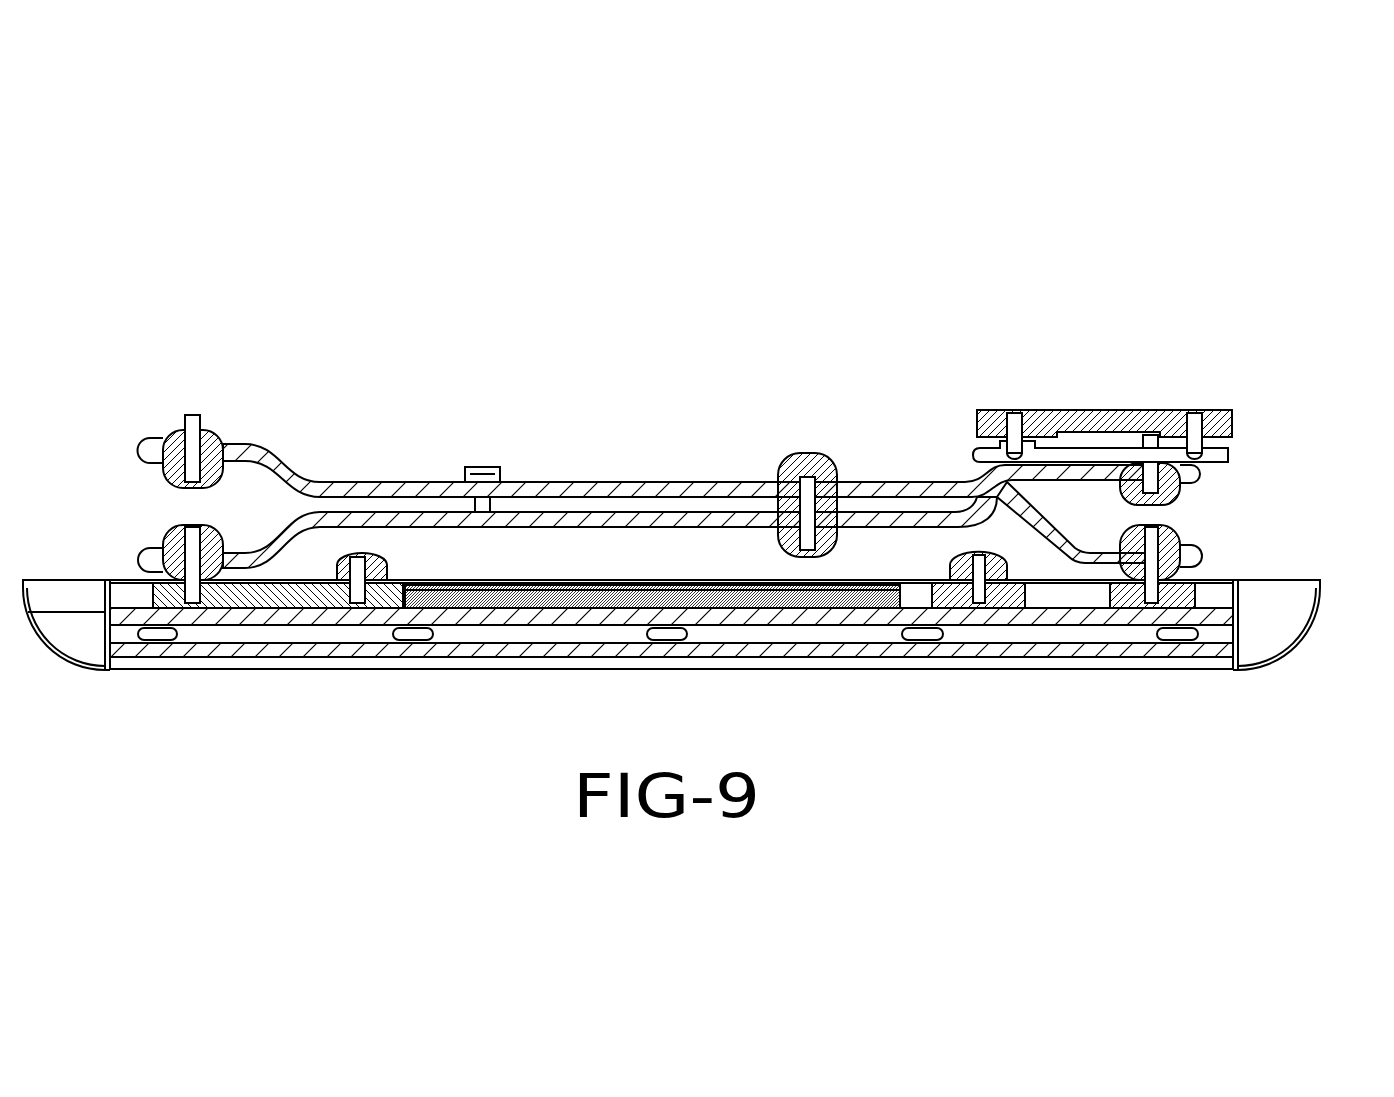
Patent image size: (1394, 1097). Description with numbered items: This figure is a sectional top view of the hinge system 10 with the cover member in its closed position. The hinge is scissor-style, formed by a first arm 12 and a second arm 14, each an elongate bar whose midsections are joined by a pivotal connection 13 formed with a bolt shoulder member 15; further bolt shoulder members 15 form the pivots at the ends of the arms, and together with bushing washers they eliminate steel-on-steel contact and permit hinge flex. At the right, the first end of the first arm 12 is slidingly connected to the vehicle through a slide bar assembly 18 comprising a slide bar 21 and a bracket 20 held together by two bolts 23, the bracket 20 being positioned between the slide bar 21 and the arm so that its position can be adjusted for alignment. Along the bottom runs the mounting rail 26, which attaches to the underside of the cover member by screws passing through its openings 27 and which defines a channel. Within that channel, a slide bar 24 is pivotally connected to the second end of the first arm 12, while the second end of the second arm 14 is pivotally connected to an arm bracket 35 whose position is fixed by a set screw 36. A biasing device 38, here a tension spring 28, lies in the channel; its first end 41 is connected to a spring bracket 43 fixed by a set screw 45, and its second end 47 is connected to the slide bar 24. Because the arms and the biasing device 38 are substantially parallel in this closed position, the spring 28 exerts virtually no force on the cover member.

The hinge system 10 is at (947, 292).
The first arm 12 is at (562, 528).
The pivotal connection 13 is at (758, 405).
The second arm 14 is at (633, 490).
The bolt shoulder member 15 is at (195, 432).
The slide bar assembly 18 is at (1155, 333).
The bracket 20 is at (1228, 455).
The slide bar 21 is at (1095, 417).
The bolt 23 is at (1013, 420).
The slide bar 24 is at (305, 600).
The mounting rail 26 is at (1008, 660).
The opening 27 is at (413, 640).
The spring 28 is at (770, 607).
The arm bracket 35 is at (1145, 608).
The set screw 36 is at (1215, 598).
The biasing device 38 is at (597, 608).
The first end of the spring 41 is at (881, 607).
The spring bracket 43 is at (962, 562).
The set screw 45 is at (995, 607).
The second end of the spring 47 is at (448, 598).